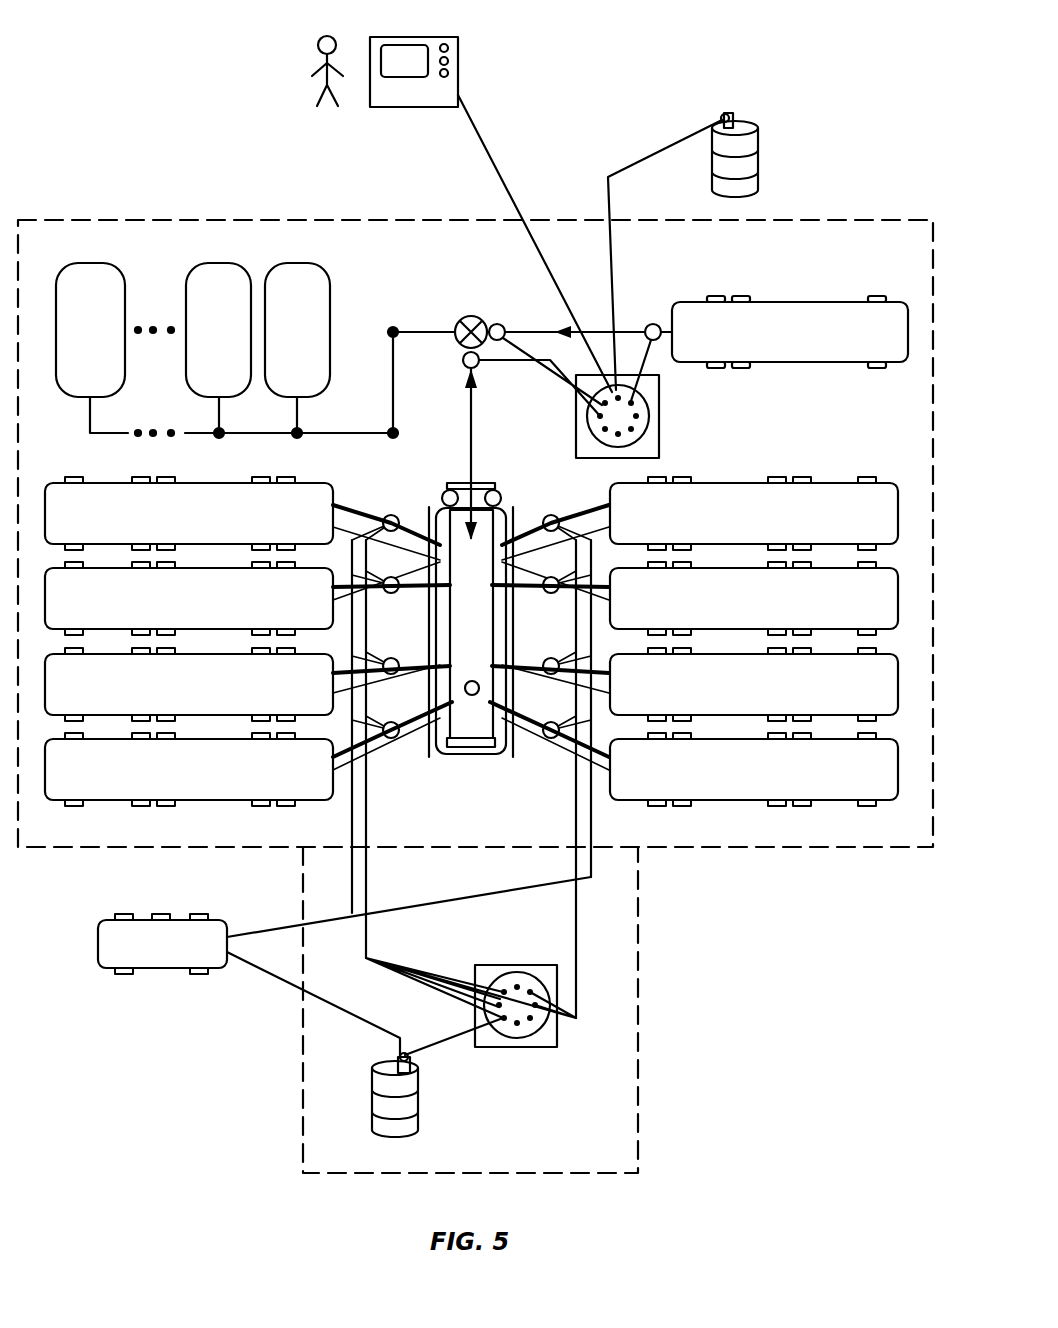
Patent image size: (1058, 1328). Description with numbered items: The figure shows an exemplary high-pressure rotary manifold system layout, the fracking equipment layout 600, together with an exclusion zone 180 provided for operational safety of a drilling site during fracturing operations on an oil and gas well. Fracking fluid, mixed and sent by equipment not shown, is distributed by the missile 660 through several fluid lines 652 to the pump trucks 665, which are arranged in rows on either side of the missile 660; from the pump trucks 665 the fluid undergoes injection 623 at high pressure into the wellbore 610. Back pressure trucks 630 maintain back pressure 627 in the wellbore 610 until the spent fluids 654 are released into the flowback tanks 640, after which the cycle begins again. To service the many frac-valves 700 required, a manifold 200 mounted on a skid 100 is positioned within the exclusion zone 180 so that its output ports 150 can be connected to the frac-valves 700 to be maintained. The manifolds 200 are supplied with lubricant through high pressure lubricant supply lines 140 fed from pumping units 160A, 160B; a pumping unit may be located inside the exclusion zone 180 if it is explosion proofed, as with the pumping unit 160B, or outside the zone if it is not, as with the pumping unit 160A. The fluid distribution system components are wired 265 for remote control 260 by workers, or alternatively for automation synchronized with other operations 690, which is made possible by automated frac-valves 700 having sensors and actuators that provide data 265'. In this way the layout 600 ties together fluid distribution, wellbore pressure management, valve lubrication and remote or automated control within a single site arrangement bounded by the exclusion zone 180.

The fracking equipment layout 600 is at (170, 86).
The remote control 260 is at (414, 35).
The wiring 265 is at (410, 576).
The data 265' is at (389, 906).
The pumping unit 160A is at (760, 150).
The explosion-proofed pumping unit 160B is at (370, 1090).
The high pressure lubricant supply line 140 is at (618, 250).
The back pressure 627 is at (632, 306).
The back pressure truck 630 is at (767, 346).
The frac-valve 700 is at (492, 323).
The wellbore 610 is at (460, 318).
The spent fluids 654 is at (422, 327).
The flowback tank 640 is at (68, 344).
The output port 150 is at (545, 357).
The injection 623 is at (474, 415).
The missile 660 is at (480, 492).
The fluid line 652 is at (358, 502).
The pump truck 665 is at (166, 528).
The skid 100 is at (650, 446).
The manifold 200 is at (657, 457).
The other operations 690 is at (160, 918).
The exclusion zone 180 is at (688, 861).